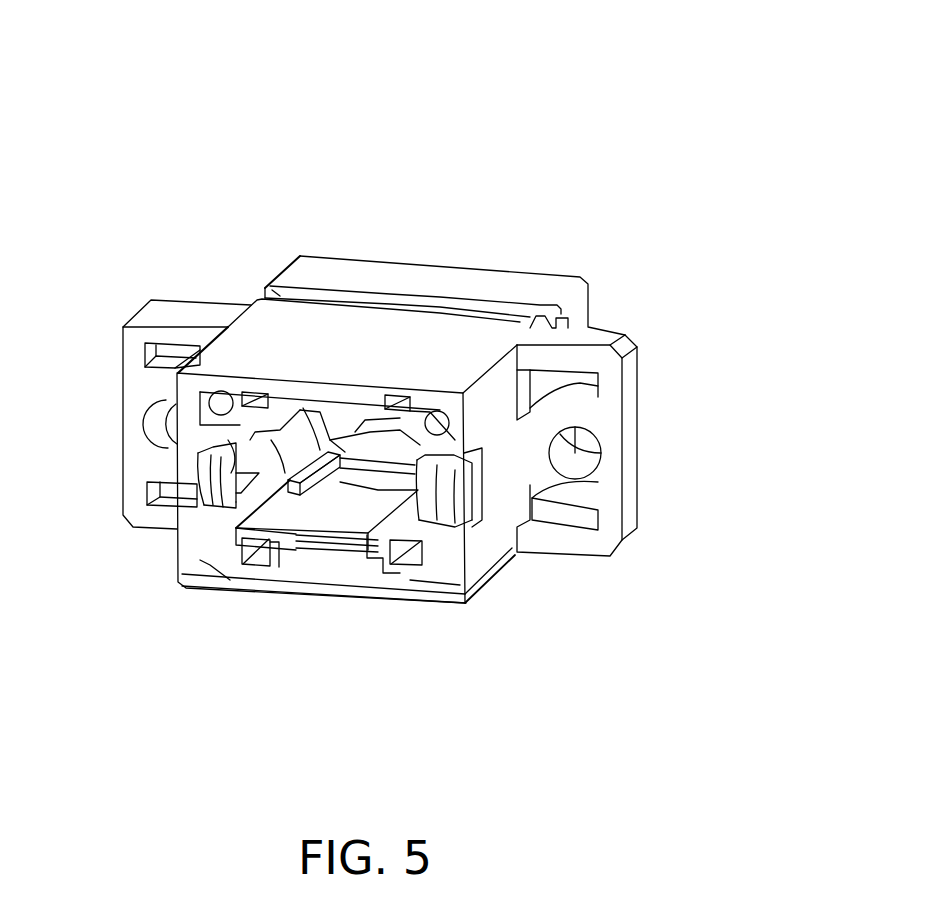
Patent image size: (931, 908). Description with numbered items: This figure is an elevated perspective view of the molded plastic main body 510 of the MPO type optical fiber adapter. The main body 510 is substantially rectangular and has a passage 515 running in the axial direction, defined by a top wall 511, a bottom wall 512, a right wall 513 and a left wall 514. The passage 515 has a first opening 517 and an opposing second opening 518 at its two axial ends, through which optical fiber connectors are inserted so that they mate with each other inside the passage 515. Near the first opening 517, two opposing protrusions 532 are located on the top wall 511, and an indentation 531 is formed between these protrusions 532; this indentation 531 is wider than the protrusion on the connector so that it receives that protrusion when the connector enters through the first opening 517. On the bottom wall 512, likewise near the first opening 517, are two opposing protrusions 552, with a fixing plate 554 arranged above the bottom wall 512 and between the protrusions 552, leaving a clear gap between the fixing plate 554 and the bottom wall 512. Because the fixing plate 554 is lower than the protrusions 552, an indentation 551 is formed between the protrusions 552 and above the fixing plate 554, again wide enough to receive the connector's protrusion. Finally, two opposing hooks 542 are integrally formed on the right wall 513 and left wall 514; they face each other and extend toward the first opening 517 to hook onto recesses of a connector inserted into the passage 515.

The main body 510 is at (445, 167).
The top wall 511 is at (348, 383).
The bottom wall 512 is at (324, 645).
The right wall 513 is at (572, 494).
The left wall 514 is at (156, 446).
The passage 515 is at (190, 618).
The first opening 517 is at (460, 641).
The second opening 518 is at (410, 305).
The indentation 531 is at (324, 328).
The protrusions 532 is at (386, 301).
The hooks 542 is at (295, 558).
The indentation 551 is at (327, 602).
The protrusions 552 is at (351, 592).
The fixing plate 554 is at (355, 578).